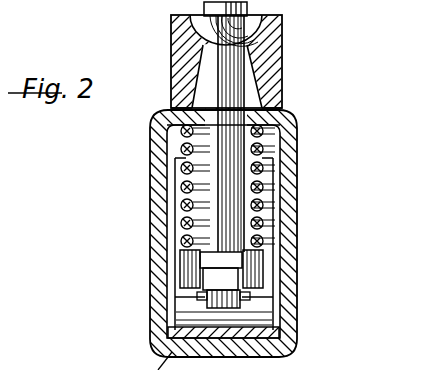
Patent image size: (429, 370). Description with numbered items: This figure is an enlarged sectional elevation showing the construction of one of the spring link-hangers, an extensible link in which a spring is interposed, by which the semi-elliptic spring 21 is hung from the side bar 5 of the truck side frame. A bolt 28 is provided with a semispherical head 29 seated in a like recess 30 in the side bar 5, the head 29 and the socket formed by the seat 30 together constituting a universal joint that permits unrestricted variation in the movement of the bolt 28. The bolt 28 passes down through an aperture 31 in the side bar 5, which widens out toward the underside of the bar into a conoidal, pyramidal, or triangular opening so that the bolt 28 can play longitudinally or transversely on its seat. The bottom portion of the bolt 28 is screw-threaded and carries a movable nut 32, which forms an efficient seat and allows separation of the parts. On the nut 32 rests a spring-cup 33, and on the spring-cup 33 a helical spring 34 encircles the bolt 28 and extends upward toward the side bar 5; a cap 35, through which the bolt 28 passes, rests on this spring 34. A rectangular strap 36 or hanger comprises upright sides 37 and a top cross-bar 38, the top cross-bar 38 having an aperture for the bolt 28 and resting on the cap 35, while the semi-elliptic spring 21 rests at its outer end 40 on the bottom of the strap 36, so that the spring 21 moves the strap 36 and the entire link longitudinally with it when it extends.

The side bar 5 is at (270, 55).
The semi-elliptic spring 21 is at (178, 197).
The bolt 28 is at (180, 142).
The semispherical head 29 is at (258, 34).
The recess 30 is at (190, 37).
The aperture 31 is at (200, 82).
The nut 32 is at (223, 280).
The spring-cup 33 is at (265, 245).
The helical spring 34 is at (262, 205).
The cap 35 is at (292, 122).
The strap 36 is at (178, 260).
The upright sides 37 is at (148, 298).
The top cross-bar 38 is at (283, 110).
The outer end of semi-elliptic spring 40 is at (182, 312).